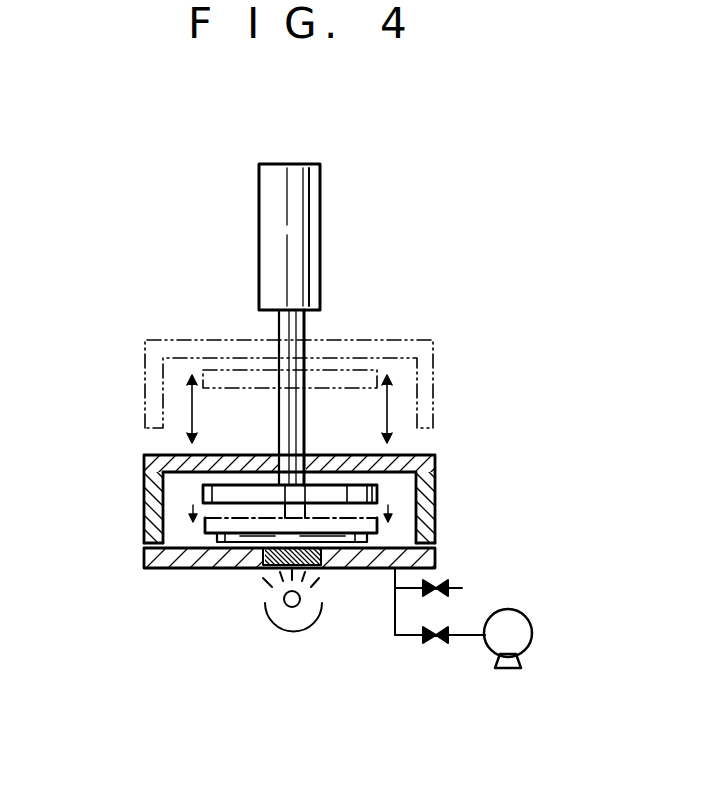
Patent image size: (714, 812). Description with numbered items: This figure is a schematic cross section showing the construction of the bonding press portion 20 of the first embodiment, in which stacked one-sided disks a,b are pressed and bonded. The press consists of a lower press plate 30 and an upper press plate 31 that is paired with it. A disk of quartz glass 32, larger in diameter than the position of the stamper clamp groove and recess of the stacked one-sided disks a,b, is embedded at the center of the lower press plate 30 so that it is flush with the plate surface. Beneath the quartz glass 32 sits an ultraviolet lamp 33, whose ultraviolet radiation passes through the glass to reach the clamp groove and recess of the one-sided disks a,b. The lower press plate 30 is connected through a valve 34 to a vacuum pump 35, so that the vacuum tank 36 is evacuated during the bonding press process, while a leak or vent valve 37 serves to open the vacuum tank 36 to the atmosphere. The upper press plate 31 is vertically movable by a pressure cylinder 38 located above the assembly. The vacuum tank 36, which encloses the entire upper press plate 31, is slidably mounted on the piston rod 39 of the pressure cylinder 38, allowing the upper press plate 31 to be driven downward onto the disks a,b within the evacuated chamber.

The bonding press portion 20 is at (295, 117).
The pressure cylinder 38 is at (320, 235).
The piston rod 39 is at (288, 333).
The vacuum tank 36 is at (433, 457).
The upper press plate 31 is at (380, 492).
The one-sided disks a,b is at (217, 542).
The lower press plate 30 is at (437, 553).
The quartz glass 32 is at (262, 570).
The ultraviolet lamp 33 is at (280, 625).
The leak valve 37 is at (448, 583).
The valve 34 is at (435, 643).
The vacuum pump 35 is at (533, 625).